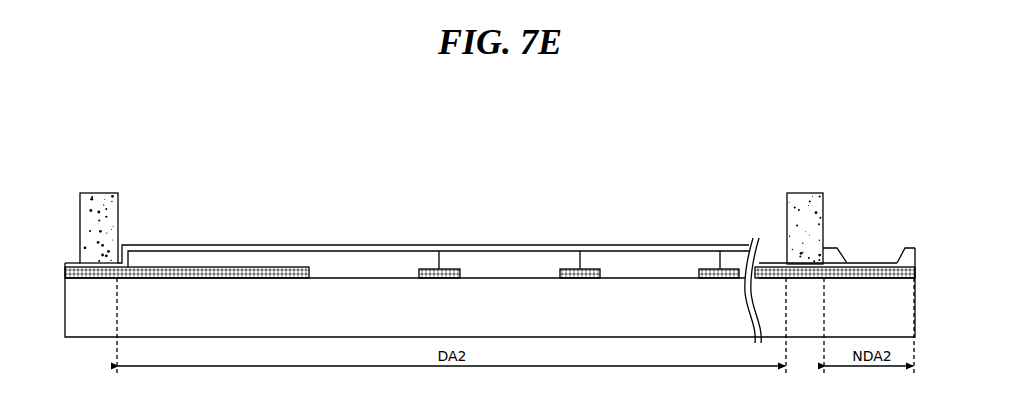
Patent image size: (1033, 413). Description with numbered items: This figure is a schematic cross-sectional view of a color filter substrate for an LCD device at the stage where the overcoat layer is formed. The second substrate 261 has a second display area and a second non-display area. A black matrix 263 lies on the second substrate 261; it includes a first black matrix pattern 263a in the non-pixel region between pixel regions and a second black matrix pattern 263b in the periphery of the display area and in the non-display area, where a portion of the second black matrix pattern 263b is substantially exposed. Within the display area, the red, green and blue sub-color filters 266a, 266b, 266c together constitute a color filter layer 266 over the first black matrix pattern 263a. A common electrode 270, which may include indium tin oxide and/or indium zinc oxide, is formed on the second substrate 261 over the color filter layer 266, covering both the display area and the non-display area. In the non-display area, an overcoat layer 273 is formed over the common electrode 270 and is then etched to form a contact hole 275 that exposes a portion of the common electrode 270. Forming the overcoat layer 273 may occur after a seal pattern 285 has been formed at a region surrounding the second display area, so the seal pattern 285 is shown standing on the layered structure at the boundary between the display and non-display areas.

The second substrate 261 is at (880, 320).
The black matrix 263 is at (373, 165).
The first black matrix pattern 263a is at (425, 268).
The second black matrix pattern 263b is at (280, 267).
The color filter layer 266 is at (598, 157).
The red sub-color filter 266a is at (437, 253).
The green sub-color filter 266b is at (528, 258).
The blue sub-color filter 266c is at (632, 260).
The common electrode 270 is at (643, 246).
The overcoat layer 273 is at (907, 250).
The contact hole 275 is at (869, 245).
The seal pattern 285 is at (110, 196).